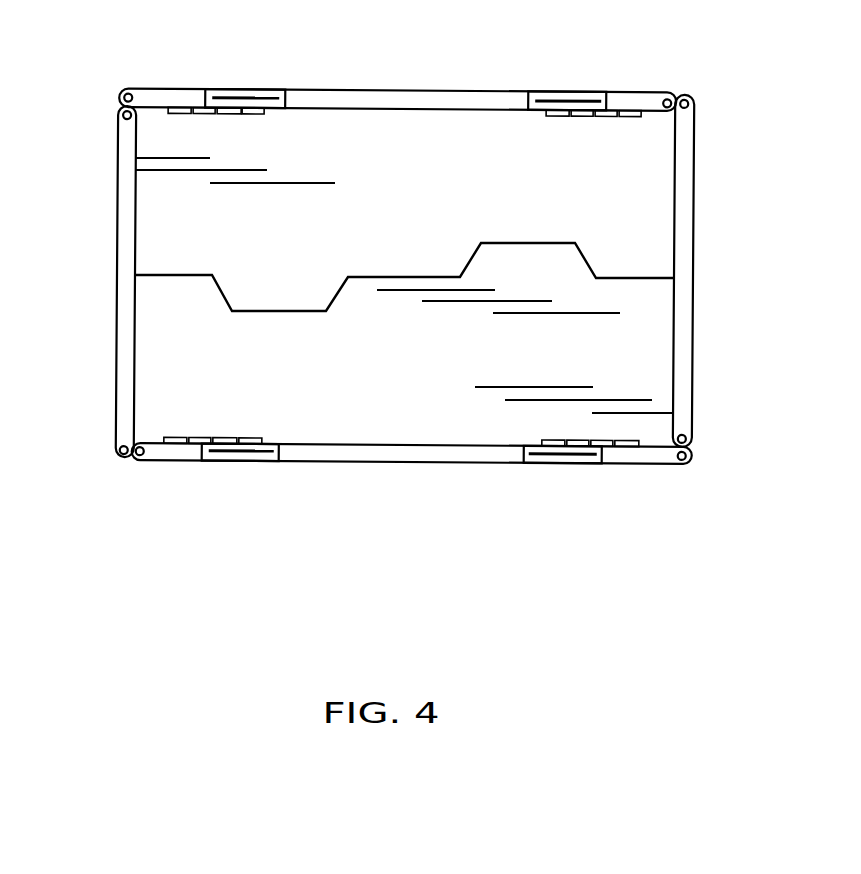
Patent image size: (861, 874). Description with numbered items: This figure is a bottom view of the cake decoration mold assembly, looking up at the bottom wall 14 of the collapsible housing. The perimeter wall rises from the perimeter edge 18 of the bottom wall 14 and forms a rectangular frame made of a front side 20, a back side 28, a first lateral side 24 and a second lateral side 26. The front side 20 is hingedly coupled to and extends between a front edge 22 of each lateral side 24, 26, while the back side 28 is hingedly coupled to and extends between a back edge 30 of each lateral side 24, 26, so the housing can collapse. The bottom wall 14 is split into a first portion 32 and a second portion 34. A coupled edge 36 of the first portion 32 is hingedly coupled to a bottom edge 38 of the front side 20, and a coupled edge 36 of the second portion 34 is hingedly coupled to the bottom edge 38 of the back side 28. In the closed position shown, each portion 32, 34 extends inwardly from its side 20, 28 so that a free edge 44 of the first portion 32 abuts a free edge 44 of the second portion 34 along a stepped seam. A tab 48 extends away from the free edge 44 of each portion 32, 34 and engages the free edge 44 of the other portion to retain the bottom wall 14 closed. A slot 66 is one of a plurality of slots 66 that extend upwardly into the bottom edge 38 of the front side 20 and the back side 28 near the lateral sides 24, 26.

The bottom wall 14 is at (402, 269).
The perimeter edge 18 is at (402, 110).
The front side 20 is at (615, 92).
The front edge 22 is at (117, 112).
The first lateral side 24 is at (693, 218).
The second lateral side 26 is at (116, 228).
The back side 28 is at (507, 462).
The back edge 30 is at (121, 462).
The first portion 32 is at (640, 187).
The second portion 34 is at (652, 362).
The coupled edge 36 is at (392, 91).
The bottom edge 38 is at (408, 260).
The free edge 44 is at (518, 243).
The tab 48 is at (266, 291).
The slot 66 is at (235, 88).